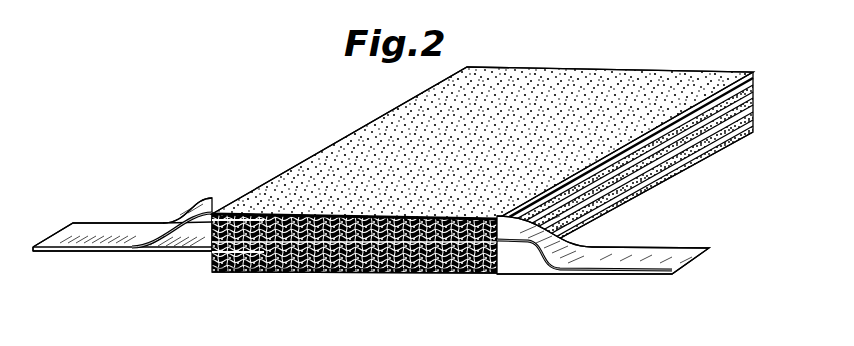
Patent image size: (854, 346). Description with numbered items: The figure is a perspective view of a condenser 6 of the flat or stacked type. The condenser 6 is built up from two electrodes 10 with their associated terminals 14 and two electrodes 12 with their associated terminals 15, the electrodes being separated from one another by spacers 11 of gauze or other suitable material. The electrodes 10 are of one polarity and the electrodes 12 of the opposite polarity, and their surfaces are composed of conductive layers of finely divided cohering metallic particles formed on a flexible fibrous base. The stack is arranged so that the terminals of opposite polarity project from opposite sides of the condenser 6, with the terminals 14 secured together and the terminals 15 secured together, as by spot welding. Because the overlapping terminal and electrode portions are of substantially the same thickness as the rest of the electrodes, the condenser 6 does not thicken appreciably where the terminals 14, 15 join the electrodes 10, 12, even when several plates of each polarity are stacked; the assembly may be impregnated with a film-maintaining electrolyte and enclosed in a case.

The condenser 6 is at (277, 275).
The electrode 10 is at (400, 268).
The spacer 11 is at (754, 104).
The electrode 12 is at (323, 150).
The terminal 14 is at (580, 242).
The terminal 15 is at (125, 238).